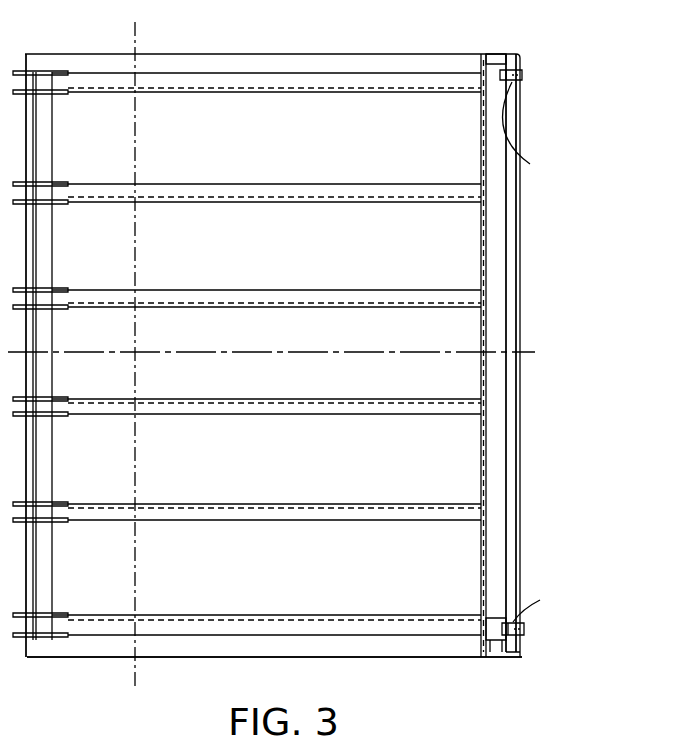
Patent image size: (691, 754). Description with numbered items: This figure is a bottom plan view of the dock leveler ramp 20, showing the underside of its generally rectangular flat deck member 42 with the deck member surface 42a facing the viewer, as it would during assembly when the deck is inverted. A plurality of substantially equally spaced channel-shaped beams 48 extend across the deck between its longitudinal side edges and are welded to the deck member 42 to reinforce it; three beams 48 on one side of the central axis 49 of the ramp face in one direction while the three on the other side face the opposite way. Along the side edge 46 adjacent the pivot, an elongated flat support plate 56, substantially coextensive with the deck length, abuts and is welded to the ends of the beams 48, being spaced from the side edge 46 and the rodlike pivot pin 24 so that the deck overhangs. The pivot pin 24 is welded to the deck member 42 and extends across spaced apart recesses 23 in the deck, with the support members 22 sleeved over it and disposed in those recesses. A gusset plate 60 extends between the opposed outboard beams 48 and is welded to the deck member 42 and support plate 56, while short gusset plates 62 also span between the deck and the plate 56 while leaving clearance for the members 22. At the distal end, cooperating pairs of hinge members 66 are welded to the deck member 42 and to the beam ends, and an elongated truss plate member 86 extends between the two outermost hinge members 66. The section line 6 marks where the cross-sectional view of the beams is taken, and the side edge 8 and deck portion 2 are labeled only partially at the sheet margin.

The ramp 20 is at (361, 53).
The left frame member 2 is at (18, 356).
The left panel 8 is at (12, 462).
The truss plate member 86 is at (50, 478).
The support plate 56 is at (480, 110).
The side edge 46 is at (520, 430).
The pivot pin 24 is at (510, 125).
The gusset plate 60 is at (500, 331).
The gusset plates 62 is at (497, 60).
The support members 22 is at (526, 76).
The recesses 23 is at (534, 352).
The central axis 49 is at (283, 352).
The beams 48 is at (248, 85).
The hinge members 66 is at (66, 72).
The deck member 42 is at (305, 657).
The deck member surface 42a is at (380, 553).
The section line 6- 6 is at (135, 22).